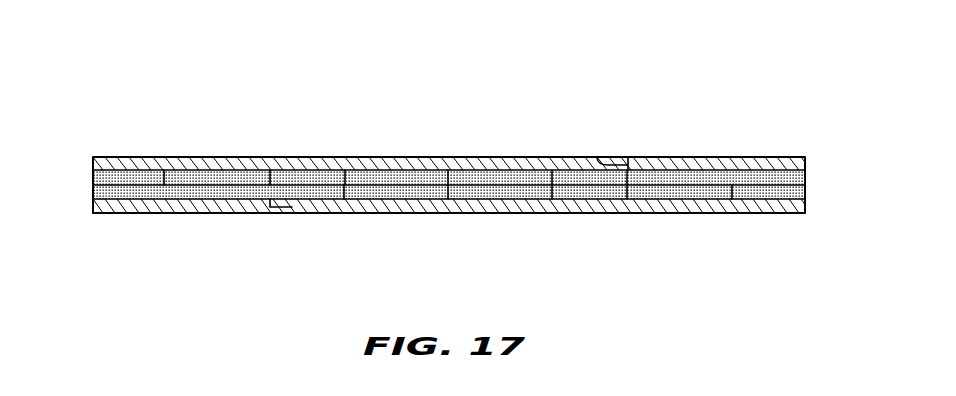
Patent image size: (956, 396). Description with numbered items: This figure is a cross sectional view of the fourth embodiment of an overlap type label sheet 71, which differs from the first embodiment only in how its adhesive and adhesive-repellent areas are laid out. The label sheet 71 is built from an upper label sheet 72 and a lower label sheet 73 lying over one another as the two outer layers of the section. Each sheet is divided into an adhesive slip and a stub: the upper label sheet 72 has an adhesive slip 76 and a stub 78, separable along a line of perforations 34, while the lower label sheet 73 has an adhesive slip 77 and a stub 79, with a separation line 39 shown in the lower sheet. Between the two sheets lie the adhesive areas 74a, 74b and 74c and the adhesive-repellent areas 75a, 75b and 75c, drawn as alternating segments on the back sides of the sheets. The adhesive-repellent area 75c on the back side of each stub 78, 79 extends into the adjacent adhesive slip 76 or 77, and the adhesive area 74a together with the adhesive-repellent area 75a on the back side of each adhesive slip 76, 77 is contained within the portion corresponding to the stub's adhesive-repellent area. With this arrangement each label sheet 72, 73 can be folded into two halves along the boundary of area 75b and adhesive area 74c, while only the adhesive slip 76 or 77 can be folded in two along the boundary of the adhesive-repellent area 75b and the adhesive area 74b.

The overlap type label sheet 71 is at (714, 92).
The upper label sheet 72 is at (763, 157).
The lower label sheet 73 is at (788, 213).
The adhesive area 74a is at (116, 176).
The adhesive area 74b is at (303, 175).
The adhesive area 74c is at (495, 176).
The adhesive-repellent area 75a is at (220, 178).
The adhesive-repellent area 75b is at (402, 172).
The adhesive-repellent area 75c is at (575, 177).
The adhesive slip 76 is at (162, 157).
The adhesive slip 77 is at (557, 213).
The stub 78 is at (658, 157).
The stub 79 is at (183, 213).
The line of perforations 34 is at (597, 158).
The notch / contact opening 39 is at (292, 207).